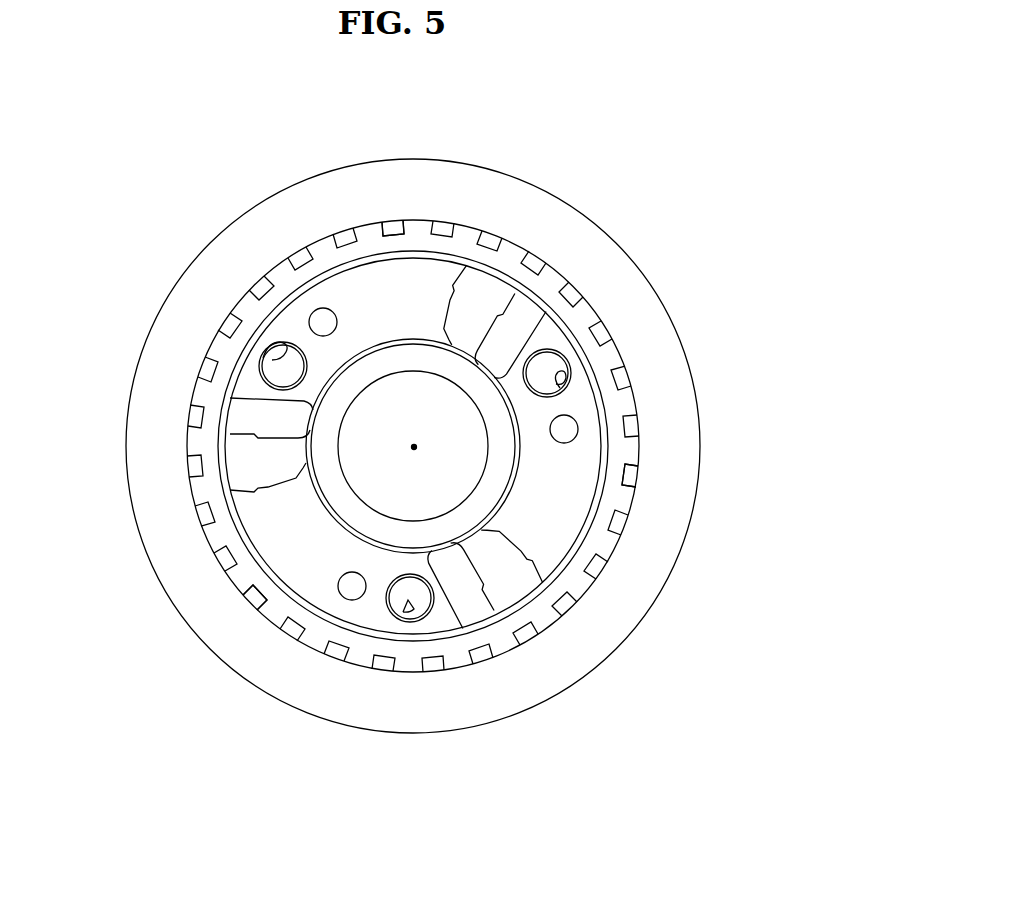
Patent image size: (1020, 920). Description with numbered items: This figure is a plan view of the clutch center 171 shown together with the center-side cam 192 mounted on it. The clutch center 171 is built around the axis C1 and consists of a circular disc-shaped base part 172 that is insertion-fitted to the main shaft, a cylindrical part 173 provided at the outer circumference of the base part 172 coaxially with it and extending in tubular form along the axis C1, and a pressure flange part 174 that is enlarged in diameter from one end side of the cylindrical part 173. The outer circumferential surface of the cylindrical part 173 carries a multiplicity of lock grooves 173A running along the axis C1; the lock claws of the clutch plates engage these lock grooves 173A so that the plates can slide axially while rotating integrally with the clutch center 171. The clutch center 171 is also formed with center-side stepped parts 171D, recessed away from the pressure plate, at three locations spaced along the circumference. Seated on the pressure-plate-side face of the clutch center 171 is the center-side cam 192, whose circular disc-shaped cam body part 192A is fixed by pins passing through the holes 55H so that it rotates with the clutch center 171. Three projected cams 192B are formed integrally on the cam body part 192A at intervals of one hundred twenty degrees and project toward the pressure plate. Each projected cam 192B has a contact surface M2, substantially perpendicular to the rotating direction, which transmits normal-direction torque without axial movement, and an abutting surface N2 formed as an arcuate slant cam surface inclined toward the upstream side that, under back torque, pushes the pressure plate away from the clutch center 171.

The clutch center 171 is at (698, 517).
The center-side stepped part 171D is at (417, 233).
The base part 172 is at (510, 473).
The cylindrical part 173 is at (588, 585).
The lock groove 173A is at (567, 607).
The pressure flange part 174 is at (603, 632).
The center-side cam 192 is at (565, 328).
The cam body part 192A is at (377, 277).
The projected cam 192B is at (492, 290).
The hole 55H is at (272, 331).
The axis C1 is at (414, 447).
The contact surface M2 is at (290, 434).
The abutting surface N2 is at (425, 338).